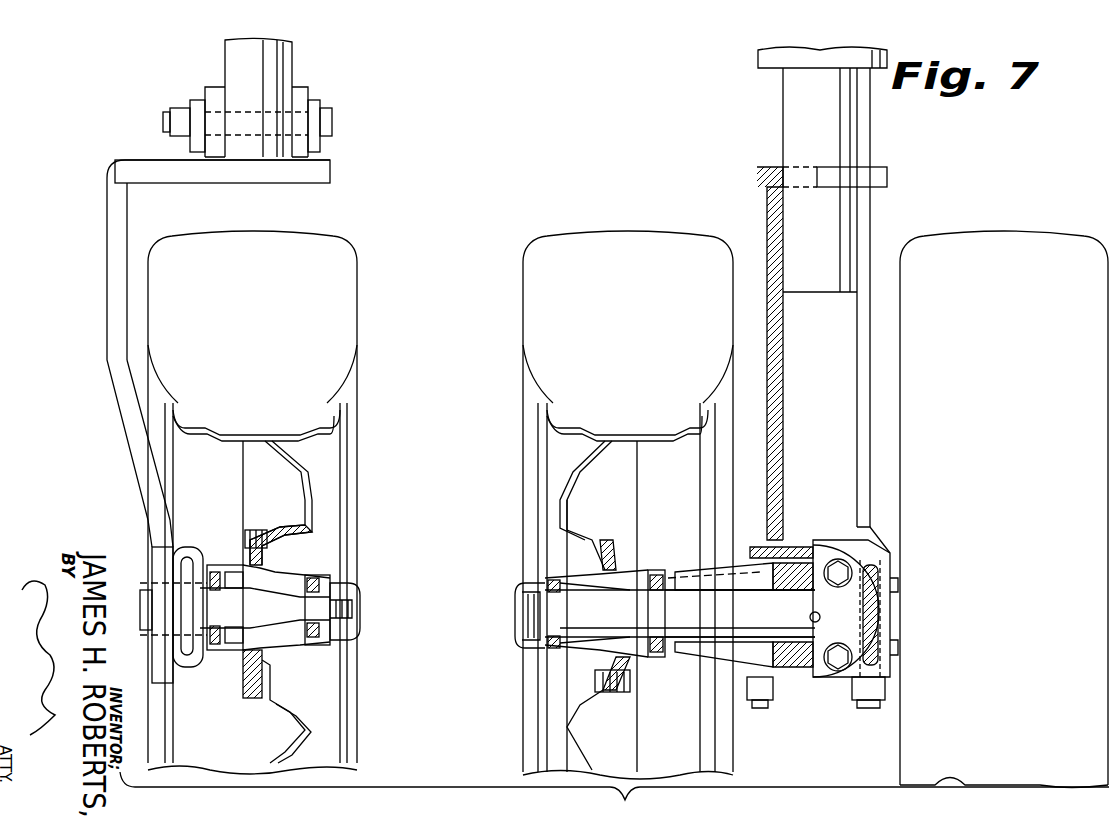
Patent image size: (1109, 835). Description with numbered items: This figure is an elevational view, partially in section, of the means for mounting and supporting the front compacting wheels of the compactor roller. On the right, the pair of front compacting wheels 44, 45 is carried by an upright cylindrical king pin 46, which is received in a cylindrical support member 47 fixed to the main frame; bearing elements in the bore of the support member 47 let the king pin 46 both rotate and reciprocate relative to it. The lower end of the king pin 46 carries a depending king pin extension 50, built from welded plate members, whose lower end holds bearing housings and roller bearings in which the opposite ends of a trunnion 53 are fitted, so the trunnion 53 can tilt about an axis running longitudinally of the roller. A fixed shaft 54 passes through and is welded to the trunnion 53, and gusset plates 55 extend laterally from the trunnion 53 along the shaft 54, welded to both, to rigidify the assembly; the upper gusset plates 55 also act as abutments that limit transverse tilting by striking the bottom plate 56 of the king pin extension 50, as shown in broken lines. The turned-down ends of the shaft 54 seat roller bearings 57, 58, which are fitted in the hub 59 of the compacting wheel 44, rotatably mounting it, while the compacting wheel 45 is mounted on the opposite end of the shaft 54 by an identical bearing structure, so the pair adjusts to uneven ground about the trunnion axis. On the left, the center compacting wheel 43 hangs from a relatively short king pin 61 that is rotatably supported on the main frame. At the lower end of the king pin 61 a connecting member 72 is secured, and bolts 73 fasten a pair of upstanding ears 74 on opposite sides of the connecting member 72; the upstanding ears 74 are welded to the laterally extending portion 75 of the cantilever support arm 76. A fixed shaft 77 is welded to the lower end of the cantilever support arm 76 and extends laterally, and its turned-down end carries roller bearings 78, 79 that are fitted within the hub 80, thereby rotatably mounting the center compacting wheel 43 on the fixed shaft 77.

The center compacting wheel 43 is at (345, 272).
The front compacting wheel 44 is at (627, 250).
The front compacting wheel 45 is at (1015, 248).
The king pin 46 is at (790, 115).
The cylindrical support member 47 is at (758, 57).
The king pin extension 50 is at (773, 212).
The trunnion 53 is at (800, 664).
The fixed shaft 54 is at (782, 630).
The gusset plates 55 is at (737, 565).
The bottom plate 56 is at (800, 560).
The roller bearing 57 is at (545, 585).
The roller bearing 58 is at (650, 576).
The hub 59 is at (618, 562).
The king pin 61 is at (278, 64).
The connecting member 72 is at (298, 96).
The bolts 73 is at (330, 119).
The upstanding ears 74 is at (197, 152).
The laterally extending portion 75 is at (248, 174).
The cantilever support arm 76 is at (117, 222).
The fixed shaft 77 is at (182, 600).
The roller bearing 78 is at (237, 570).
The roller bearing 79 is at (345, 586).
The hub 80 is at (305, 577).